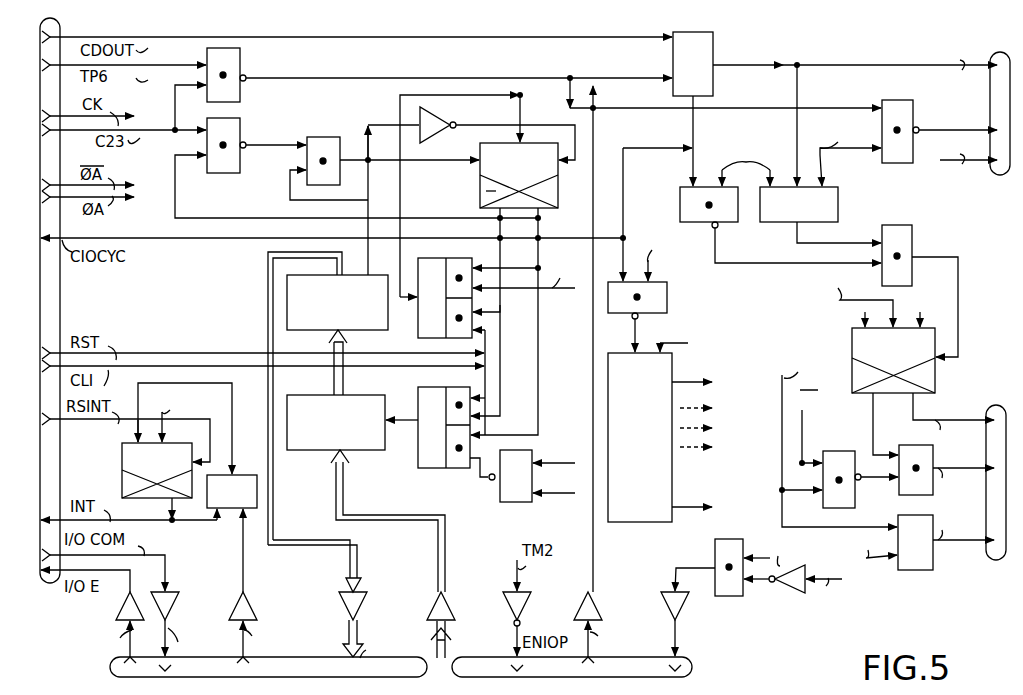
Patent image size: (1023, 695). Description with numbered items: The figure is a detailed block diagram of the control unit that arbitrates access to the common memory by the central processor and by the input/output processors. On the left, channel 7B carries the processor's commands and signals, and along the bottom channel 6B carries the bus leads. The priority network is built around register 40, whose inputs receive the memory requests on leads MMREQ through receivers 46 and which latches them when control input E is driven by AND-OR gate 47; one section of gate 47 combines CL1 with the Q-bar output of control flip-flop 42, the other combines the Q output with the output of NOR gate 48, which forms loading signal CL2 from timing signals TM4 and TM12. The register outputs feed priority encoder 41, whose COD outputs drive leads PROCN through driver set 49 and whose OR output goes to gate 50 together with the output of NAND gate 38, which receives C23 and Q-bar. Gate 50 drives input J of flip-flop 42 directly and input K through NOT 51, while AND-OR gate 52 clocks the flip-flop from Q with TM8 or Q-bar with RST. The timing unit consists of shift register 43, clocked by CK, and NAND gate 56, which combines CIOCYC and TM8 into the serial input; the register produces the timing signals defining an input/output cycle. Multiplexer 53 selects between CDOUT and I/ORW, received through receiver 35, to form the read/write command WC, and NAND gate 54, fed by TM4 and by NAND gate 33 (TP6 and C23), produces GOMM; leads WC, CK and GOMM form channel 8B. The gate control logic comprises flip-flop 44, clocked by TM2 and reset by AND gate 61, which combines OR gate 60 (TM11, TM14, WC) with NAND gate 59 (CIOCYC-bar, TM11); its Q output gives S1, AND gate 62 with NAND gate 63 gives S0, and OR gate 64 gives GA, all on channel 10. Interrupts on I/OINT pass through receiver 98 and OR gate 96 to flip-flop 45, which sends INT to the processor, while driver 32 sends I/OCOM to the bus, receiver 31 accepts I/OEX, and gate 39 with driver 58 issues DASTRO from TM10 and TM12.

The channel 7B is at (52, 584).
The NAND gate 33 is at (240, 92).
The NAND gate 38 is at (212, 174).
The AND gate 50 is at (340, 168).
The NOT 51 is at (430, 136).
The control flip-flop 42 is at (480, 192).
The multiplexer 53 is at (714, 50).
The NAND gate 54 is at (878, 98).
The channel 8B is at (990, 176).
The NAND gate 59 is at (680, 206).
The OR gate 60 is at (770, 230).
The AND gate 61 is at (912, 244).
The NAND gate 56 is at (667, 300).
The shift register 43 is at (608, 373).
The flip-flop 44 is at (936, 384).
The NAND gate 63 is at (838, 451).
The AND gate 62 is at (899, 494).
The OR gate 64 is at (933, 568).
The channel 10 is at (996, 560).
The priority encoder 41 is at (287, 290).
The AND-OR gate 52 is at (416, 330).
The AND-OR gate 47 is at (430, 468).
The NOR gate 48 is at (500, 500).
The register 40 is at (352, 452).
The flip-flop 45 is at (122, 462).
The OR gate 96 is at (244, 472).
The receiver 31 is at (118, 612).
The driver 32 is at (185, 596).
The interface receiver 98 is at (257, 600).
The driver set 49 is at (367, 600).
The receivers 46 is at (455, 600).
The receiver 35 is at (602, 600).
The driver 58 is at (680, 612).
The gate 39 is at (743, 598).
The channel 6B is at (692, 667).